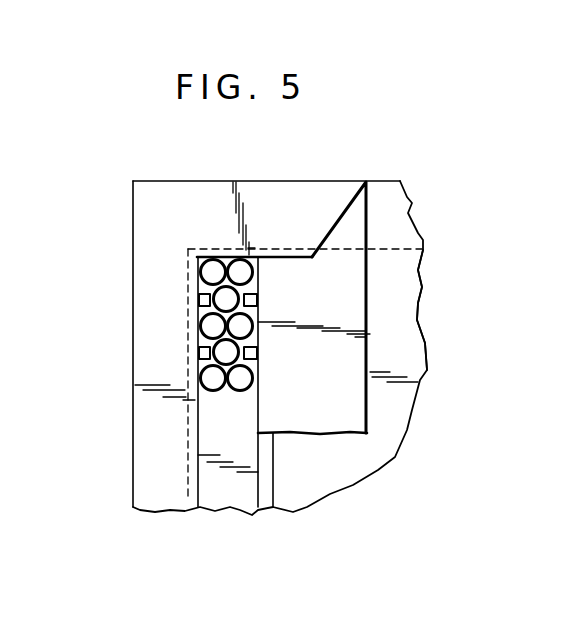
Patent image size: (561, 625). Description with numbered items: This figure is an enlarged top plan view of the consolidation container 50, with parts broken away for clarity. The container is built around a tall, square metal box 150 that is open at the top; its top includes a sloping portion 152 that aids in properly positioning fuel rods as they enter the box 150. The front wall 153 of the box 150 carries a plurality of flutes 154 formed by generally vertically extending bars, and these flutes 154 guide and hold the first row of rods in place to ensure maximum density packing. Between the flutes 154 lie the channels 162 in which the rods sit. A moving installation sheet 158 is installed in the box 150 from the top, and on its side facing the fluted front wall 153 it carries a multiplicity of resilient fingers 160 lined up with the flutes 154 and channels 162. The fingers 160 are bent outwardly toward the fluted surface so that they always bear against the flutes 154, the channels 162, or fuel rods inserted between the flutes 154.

The consolidation container 50 is at (436, 371).
The box 150 is at (295, 178).
The sloping portion 152 is at (223, 203).
The front wall 153 is at (200, 492).
The flutes 154 is at (200, 299).
The moving installation sheet 158 is at (265, 480).
The resilient fingers 160 is at (258, 299).
The channels 162 is at (195, 287).